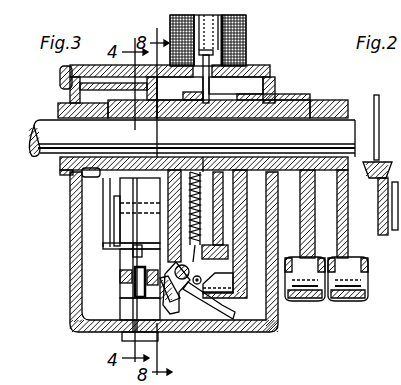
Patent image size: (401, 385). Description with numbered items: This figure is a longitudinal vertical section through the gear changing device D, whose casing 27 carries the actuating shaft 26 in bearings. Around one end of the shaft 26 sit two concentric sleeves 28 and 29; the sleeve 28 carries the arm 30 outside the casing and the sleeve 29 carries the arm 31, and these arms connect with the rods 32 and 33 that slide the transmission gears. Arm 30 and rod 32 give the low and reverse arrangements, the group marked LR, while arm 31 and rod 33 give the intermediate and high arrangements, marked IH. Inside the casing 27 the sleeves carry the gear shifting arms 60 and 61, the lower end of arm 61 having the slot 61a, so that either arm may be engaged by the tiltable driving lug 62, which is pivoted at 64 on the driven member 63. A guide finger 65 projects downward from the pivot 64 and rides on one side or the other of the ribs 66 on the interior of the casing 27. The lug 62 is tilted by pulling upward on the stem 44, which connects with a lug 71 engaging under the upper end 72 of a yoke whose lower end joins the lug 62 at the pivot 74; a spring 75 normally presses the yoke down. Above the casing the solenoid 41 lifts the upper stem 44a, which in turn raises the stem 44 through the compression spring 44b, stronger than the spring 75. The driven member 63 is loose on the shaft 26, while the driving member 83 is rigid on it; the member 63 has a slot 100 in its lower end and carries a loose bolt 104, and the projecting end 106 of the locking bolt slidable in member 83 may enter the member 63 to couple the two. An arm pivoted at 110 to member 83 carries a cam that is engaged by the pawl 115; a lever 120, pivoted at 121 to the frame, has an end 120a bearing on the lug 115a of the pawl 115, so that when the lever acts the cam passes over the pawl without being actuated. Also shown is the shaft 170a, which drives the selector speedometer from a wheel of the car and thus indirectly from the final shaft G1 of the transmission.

The solenoid 41 is at (168, 23).
The upper stem 44a is at (240, 42).
The compression spring 44b is at (246, 21).
The stem 44 is at (240, 65).
The upper end of yoke 72 is at (180, 88).
The lug 71 is at (236, 87).
The sleeve 29 is at (303, 96).
The sleeve 28 is at (325, 109).
The actuating shaft 26 is at (192, 138).
The spring 75 is at (203, 165).
The gear shifting arm 60 is at (228, 175).
The casing 27 is at (278, 327).
The gear changing device D is at (70, 333).
The pivot 74 is at (232, 329).
The pivot 121 is at (82, 177).
The gear shifting arm 61 is at (246, 245).
The slot 61a is at (236, 282).
The tiltable driving lug 62 is at (218, 296).
The arm 31 is at (308, 237).
The indicator I&H IH is at (302, 241).
The arm 30 is at (347, 211).
The indicator L&R LR is at (347, 233).
The rod 33 is at (292, 299).
The rod 32 is at (362, 301).
The driven member 63 is at (172, 230).
The lever 120 is at (100, 200).
The pivot 110 is at (112, 211).
The driving member 83 is at (112, 223).
The end of lever 120a is at (105, 243).
The pawl 115 is at (125, 249).
The lug 115a is at (112, 261).
The projecting end of locking bolt 106 is at (133, 285).
The loose bolt 104 is at (125, 297).
The slot 100 is at (130, 304).
The ribs 66 is at (185, 301).
The pivot 64 is at (226, 315).
The guide finger 65 is at (170, 323).
The shaft 170a is at (378, 113).
The final shaft G1 is at (386, 243).